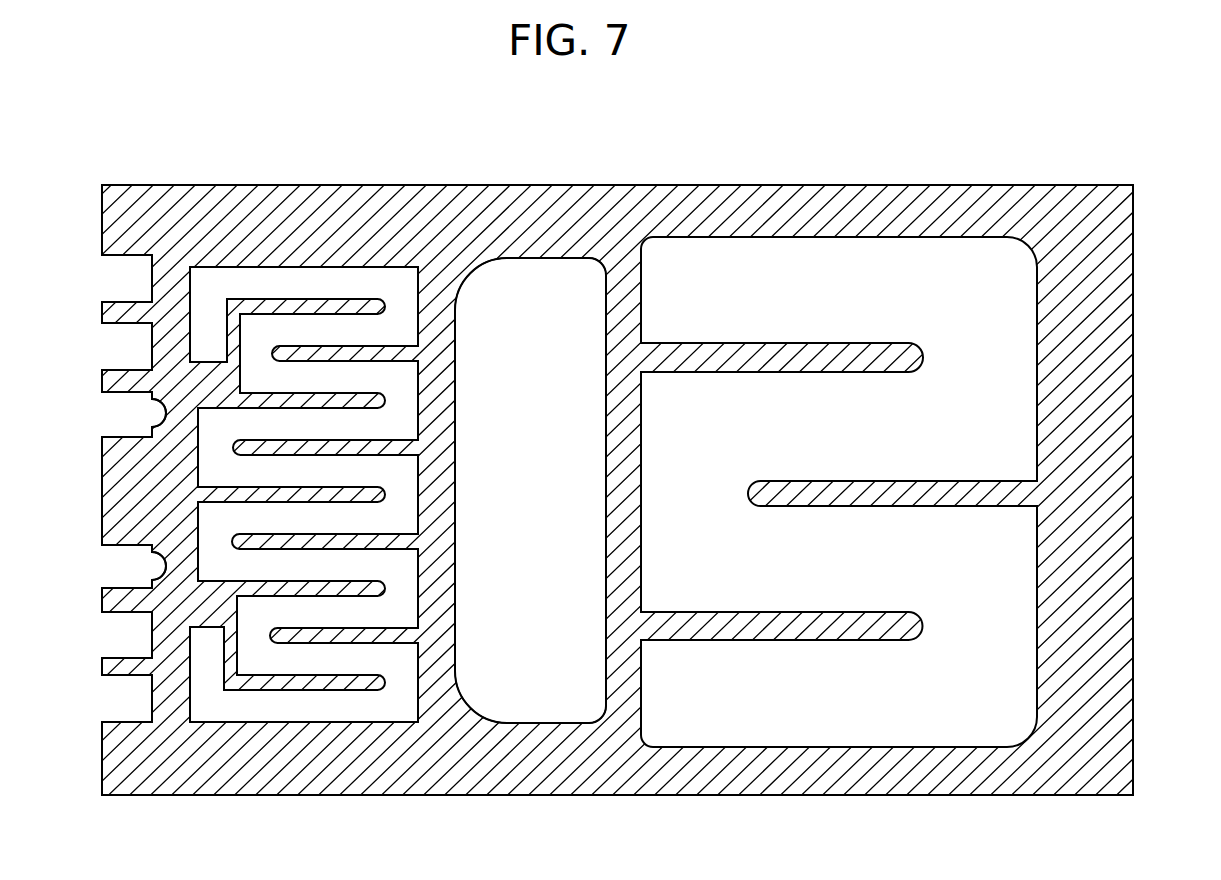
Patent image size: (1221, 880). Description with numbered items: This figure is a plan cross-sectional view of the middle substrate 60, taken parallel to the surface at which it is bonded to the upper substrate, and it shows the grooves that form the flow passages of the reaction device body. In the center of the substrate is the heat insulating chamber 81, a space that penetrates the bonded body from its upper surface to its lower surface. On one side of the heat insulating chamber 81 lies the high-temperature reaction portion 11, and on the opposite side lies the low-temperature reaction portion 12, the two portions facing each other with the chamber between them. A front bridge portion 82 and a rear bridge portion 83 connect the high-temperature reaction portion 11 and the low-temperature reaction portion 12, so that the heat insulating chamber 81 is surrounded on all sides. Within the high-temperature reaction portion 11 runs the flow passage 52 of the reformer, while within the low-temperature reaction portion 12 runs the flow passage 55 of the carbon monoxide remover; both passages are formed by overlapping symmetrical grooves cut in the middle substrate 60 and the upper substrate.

The high-temperature reaction portion 11 is at (1085, 482).
The low-temperature reaction portion 12 is at (217, 608).
The flow passage 52 is at (890, 265).
The flow passage 55 is at (288, 282).
The middle substrate 60 is at (1133, 398).
The heat insulating chamber 81 is at (533, 705).
The bridge portion 82 is at (497, 765).
The bridge portion 83 is at (522, 232).